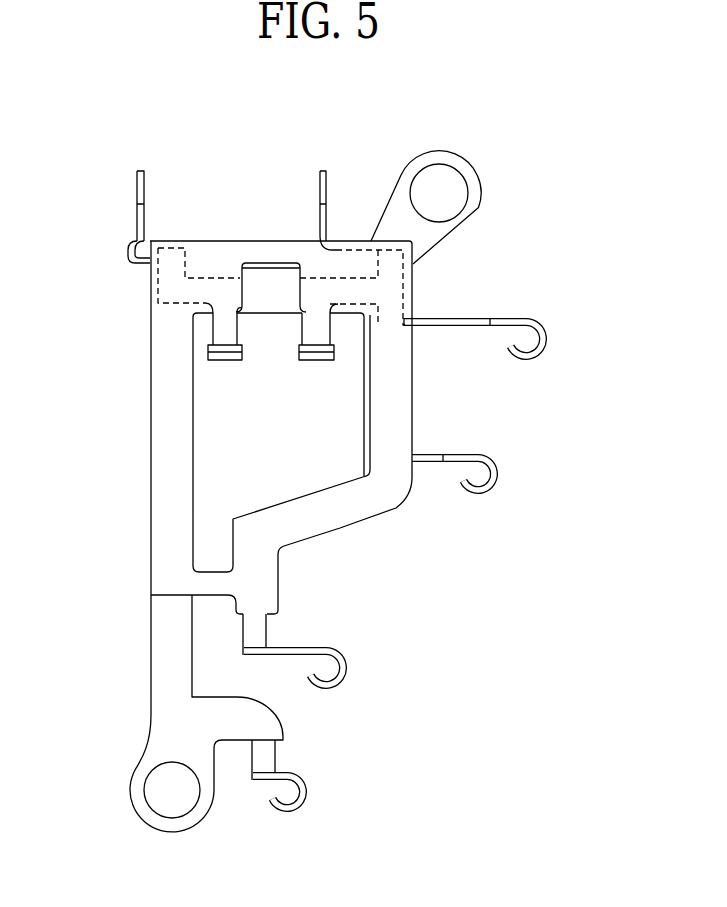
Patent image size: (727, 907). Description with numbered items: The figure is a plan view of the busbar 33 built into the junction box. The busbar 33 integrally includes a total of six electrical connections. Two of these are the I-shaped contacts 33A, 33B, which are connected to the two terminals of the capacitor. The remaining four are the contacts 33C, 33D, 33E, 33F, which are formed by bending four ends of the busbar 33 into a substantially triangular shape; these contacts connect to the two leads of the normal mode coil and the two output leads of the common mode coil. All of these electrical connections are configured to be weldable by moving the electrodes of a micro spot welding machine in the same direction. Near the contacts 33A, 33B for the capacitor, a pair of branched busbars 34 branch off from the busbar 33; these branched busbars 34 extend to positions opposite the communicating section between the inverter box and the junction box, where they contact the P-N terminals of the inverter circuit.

The busbar 33 is at (172, 452).
The I-shaped contact 33A is at (226, 353).
The I-shaped contact 33B is at (316, 353).
The contact 33C is at (544, 348).
The contact 33D is at (496, 486).
The contact 33E is at (349, 679).
The contact 33F is at (306, 803).
The branched busbars 34 is at (137, 186).